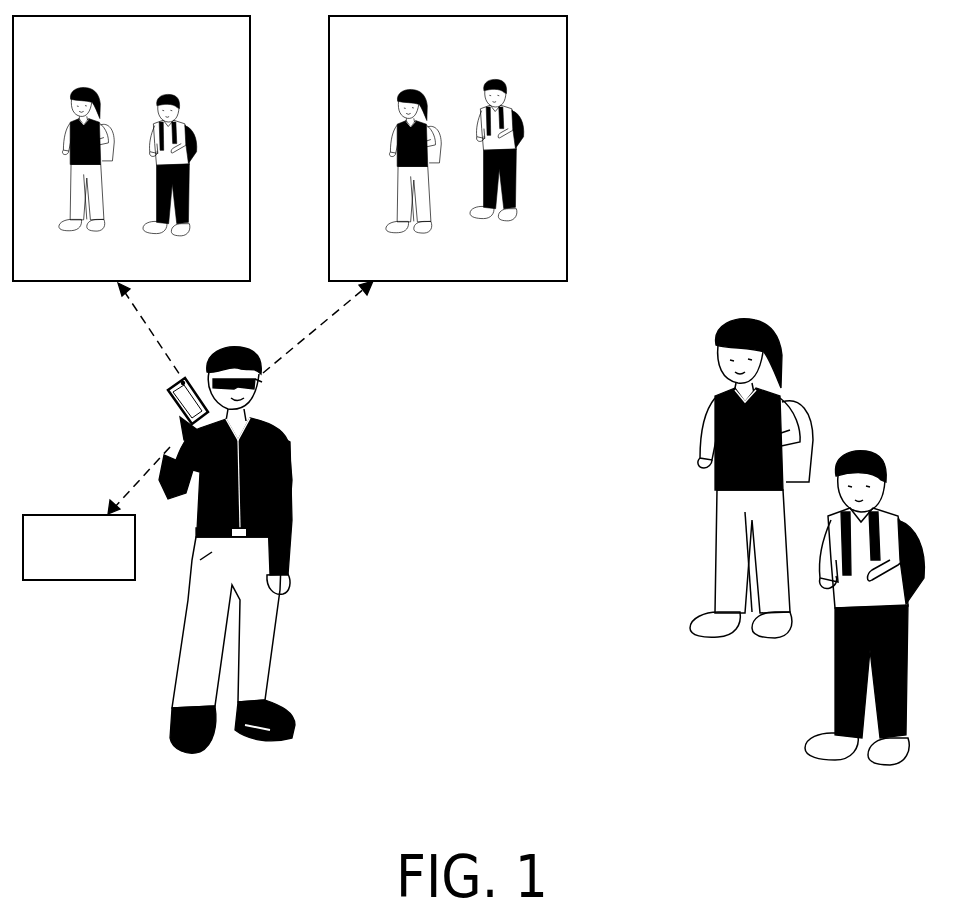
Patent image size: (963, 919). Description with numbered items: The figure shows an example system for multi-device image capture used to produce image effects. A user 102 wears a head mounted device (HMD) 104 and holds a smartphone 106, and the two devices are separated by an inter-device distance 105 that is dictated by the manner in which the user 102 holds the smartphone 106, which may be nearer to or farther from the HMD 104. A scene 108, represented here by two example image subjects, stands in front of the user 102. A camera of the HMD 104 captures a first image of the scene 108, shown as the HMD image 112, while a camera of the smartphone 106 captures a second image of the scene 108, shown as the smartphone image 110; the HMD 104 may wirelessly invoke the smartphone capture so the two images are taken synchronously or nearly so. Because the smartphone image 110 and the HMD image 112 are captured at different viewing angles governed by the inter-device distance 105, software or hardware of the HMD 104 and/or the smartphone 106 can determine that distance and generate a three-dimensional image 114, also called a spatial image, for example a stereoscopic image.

The user 102 is at (241, 348).
The head mounted device 104 is at (254, 394).
The inter-device distance 105 is at (199, 382).
The smartphone 106 is at (182, 412).
The scene 108 is at (838, 334).
The smartphone image 110 is at (131, 148).
The HMD image 112 is at (448, 148).
The 3D image 114 is at (79, 547).